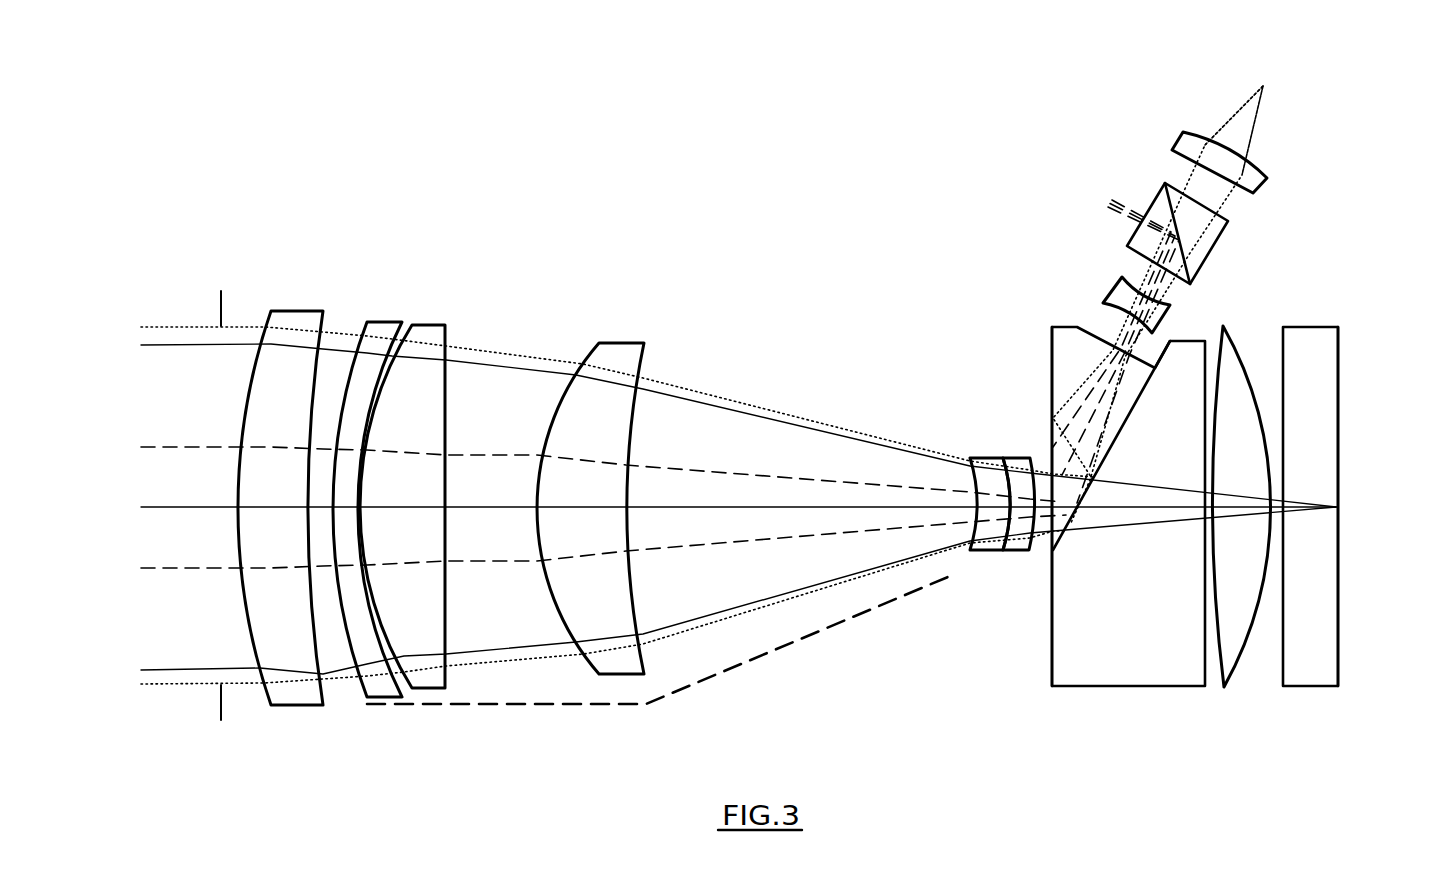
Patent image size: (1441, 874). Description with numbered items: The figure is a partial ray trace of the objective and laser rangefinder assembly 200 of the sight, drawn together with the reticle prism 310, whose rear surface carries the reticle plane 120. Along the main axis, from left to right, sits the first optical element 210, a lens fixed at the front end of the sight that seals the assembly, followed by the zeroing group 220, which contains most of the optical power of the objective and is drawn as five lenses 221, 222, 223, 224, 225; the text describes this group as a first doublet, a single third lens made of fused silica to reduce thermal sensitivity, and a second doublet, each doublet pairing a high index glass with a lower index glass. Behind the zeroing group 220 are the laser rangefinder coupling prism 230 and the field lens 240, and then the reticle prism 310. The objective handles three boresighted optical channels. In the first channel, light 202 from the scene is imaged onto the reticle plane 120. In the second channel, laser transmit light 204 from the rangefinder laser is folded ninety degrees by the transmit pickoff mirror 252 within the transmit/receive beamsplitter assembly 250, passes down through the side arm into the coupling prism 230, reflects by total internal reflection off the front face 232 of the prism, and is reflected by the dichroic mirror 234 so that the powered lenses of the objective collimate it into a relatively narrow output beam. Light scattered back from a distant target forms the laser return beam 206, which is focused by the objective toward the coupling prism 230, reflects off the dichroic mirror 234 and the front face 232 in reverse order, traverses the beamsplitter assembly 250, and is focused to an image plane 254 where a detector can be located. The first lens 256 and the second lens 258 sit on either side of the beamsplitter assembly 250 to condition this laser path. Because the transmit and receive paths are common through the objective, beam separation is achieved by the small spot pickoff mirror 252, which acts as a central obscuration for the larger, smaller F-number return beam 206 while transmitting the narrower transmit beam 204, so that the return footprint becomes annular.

The reticle plane 120 is at (1338, 520).
The objective and laser rangefinder assembly 200 is at (705, 158).
The light from the scene 202 is at (145, 344).
The laser transmit light 204 is at (156, 446).
The laser return beam 206 is at (208, 326).
The first optical element 210 is at (299, 318).
The zeroing group 220 is at (706, 681).
The lens element 221 is at (378, 333).
The lens element 222 is at (439, 374).
The lens element 223 is at (594, 390).
The doublet lens element 224 is at (992, 480).
The doublet lens element 225 is at (1020, 532).
The laser rangefinder coupling prism 230 is at (1067, 658).
The front face of the prism 232 is at (1052, 446).
The dichroic mirror 234 is at (1053, 550).
The field lens 240 is at (1226, 634).
The transmit/receive beamsplitter assembly 250 is at (1196, 256).
The transmit pickoff mirror 252 is at (1188, 238).
The image plane 254 is at (1260, 76).
The first lens 256 is at (1120, 288).
The second lens 258 is at (1245, 178).
The reticle prism 310 is at (1323, 647).